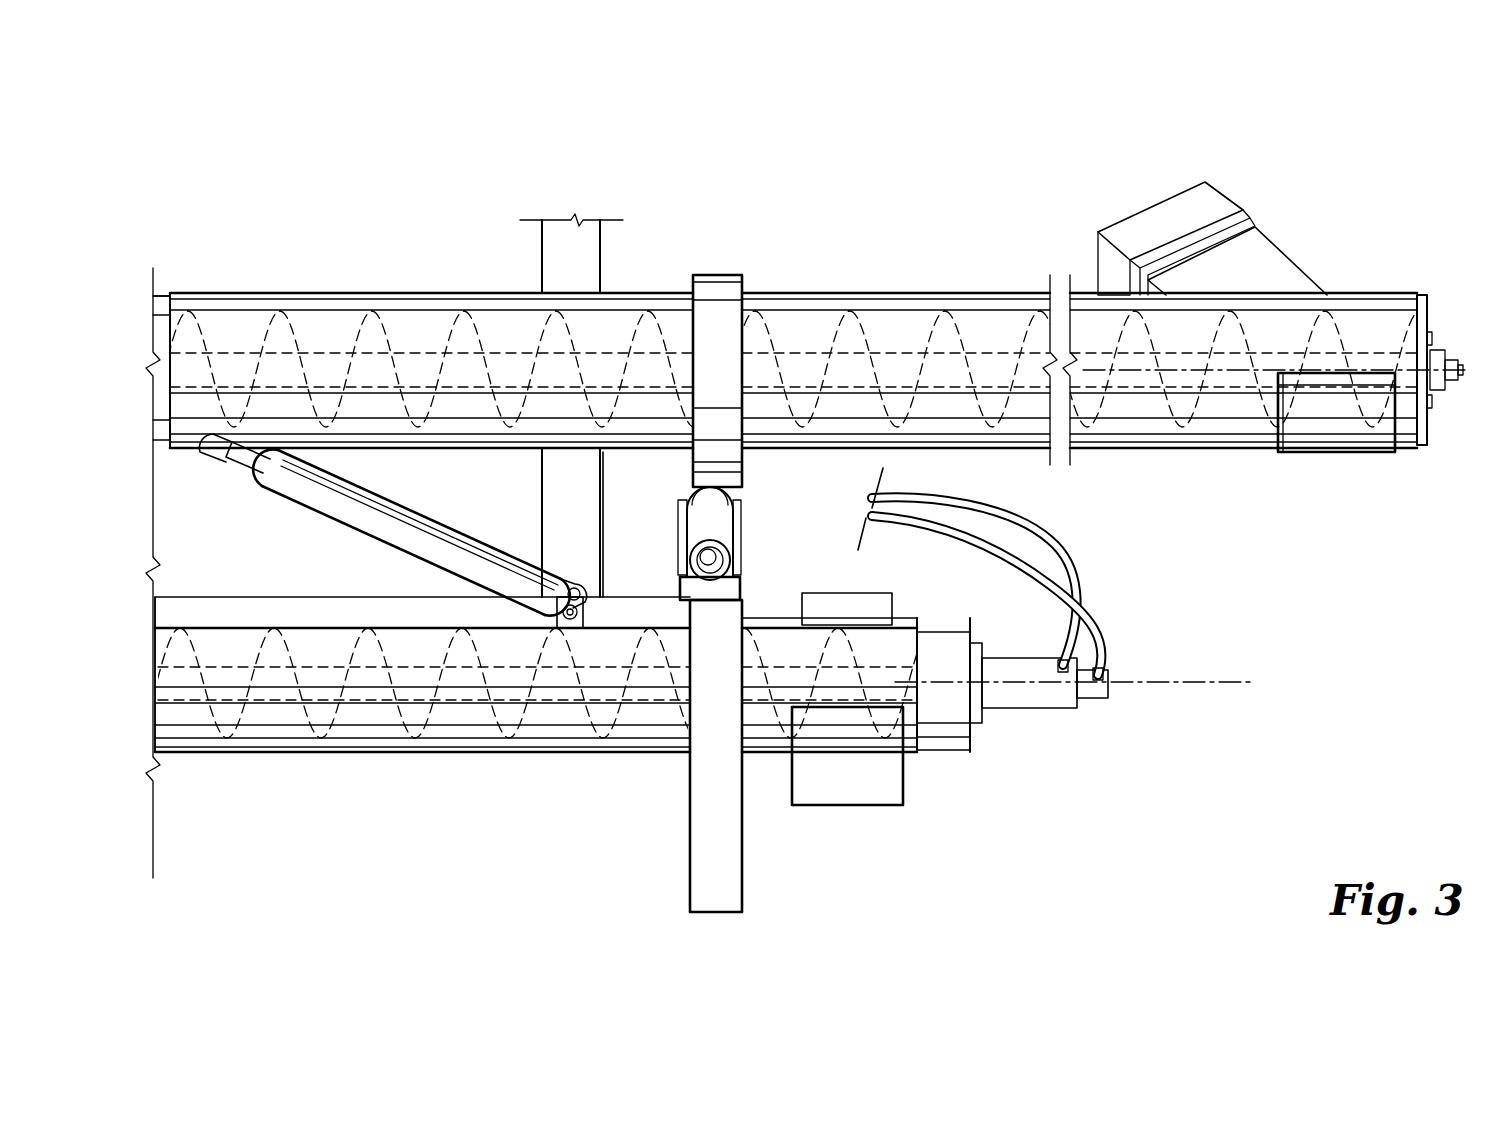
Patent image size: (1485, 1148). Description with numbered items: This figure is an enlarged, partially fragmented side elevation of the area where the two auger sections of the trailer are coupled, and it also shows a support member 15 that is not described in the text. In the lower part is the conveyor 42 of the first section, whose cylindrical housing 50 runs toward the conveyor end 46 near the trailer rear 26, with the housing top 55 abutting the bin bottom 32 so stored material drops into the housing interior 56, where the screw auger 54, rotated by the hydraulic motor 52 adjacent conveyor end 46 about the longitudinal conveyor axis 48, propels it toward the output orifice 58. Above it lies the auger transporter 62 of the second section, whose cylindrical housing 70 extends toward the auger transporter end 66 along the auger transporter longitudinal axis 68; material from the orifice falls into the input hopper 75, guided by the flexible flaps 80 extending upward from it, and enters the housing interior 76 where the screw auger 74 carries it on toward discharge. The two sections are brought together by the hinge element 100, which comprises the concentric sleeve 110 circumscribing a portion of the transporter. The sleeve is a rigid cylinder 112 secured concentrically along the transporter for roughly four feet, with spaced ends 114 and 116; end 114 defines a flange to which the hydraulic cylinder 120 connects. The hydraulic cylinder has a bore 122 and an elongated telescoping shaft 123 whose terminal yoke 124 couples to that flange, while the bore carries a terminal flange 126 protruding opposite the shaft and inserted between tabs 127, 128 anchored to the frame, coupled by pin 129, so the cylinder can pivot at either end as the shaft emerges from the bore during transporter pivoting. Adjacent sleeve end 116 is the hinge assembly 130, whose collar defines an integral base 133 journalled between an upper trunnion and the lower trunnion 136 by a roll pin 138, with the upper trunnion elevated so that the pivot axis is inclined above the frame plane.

The support post 15 is at (690, 212).
The trailer rear 26 is at (690, 854).
The bin bottom 32 is at (740, 463).
The conveyor 42 is at (500, 763).
The conveyor end 46 is at (970, 752).
The longitudinal conveyor axis 48 is at (1236, 682).
The cylindrical housing 50 is at (172, 632).
The hydraulic motor 52 is at (1020, 700).
The screw auger 54 is at (303, 752).
The housing top 55 is at (160, 640).
The housing interior 56 is at (372, 755).
The output orifice 58 is at (838, 806).
The auger transporter 62 is at (818, 282).
The auger transporter end 66 is at (1424, 304).
The auger transporter longitudinal axis 68 is at (1470, 374).
The cylindrical housing 70 is at (890, 304).
The screw auger 74 is at (962, 334).
The input hopper 75 is at (1273, 280).
The housing interior 76 is at (900, 330).
The flexible flaps 80 is at (1156, 214).
The hinge element 100 is at (500, 248).
The concentric sleeve 110 is at (312, 286).
The rigid cylinder 112 is at (340, 306).
The sleeve end 114 is at (170, 292).
The sleeve end 116 is at (692, 292).
The hydraulic cylinder 120 is at (362, 547).
The bore 122 is at (418, 528).
The telescoping shaft 123 is at (240, 472).
The terminal yoke 124 is at (215, 458).
The terminal flange 126 is at (560, 582).
The tab 127 is at (578, 590).
The tab 128 is at (606, 598).
The pin 129 is at (586, 612).
The hinge assembly 130 is at (744, 272).
The integral base 133 is at (682, 463).
The lower trunnion 136 is at (714, 512).
The roll pin 138 is at (714, 566).